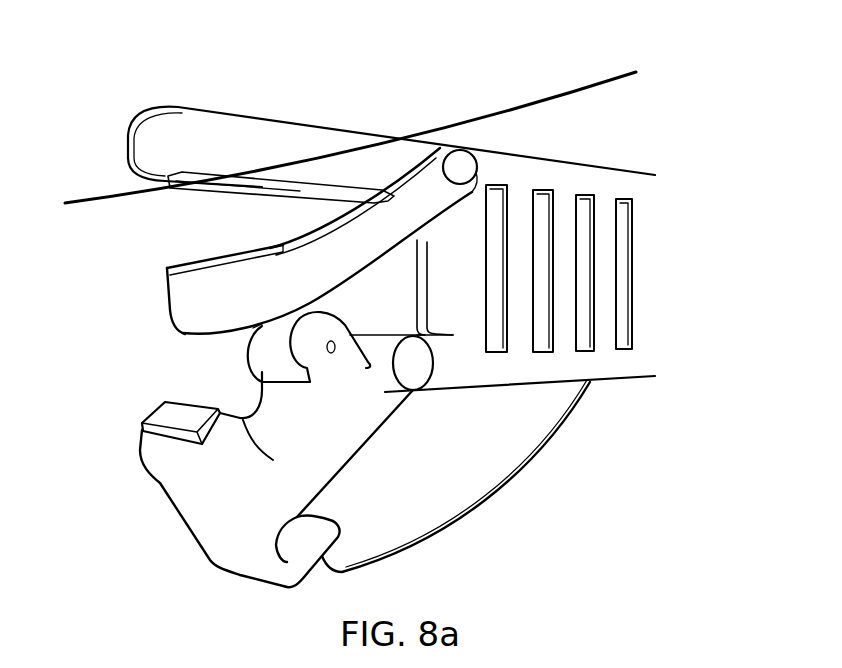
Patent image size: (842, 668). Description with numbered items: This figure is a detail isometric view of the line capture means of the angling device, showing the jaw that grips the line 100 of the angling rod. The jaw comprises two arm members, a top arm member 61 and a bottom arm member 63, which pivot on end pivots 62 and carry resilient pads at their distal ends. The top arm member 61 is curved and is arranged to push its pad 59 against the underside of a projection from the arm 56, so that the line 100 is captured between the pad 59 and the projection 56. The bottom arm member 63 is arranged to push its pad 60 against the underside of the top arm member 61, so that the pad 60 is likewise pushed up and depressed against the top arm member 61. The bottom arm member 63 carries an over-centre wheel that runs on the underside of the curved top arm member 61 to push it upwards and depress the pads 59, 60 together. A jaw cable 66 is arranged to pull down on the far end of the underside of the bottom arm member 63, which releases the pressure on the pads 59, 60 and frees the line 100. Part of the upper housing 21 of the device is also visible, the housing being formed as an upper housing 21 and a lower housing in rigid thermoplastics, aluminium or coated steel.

The line 100 is at (580, 90).
The projection from the arm 56 is at (693, 297).
The resilient pad 59 is at (225, 262).
The top arm member 61 is at (380, 250).
The end pivot 62 is at (462, 165).
The upper housing 21 is at (267, 355).
The resilient pad 60 is at (162, 415).
The bottom arm member 63 is at (200, 498).
The jaw cable 66 is at (447, 530).